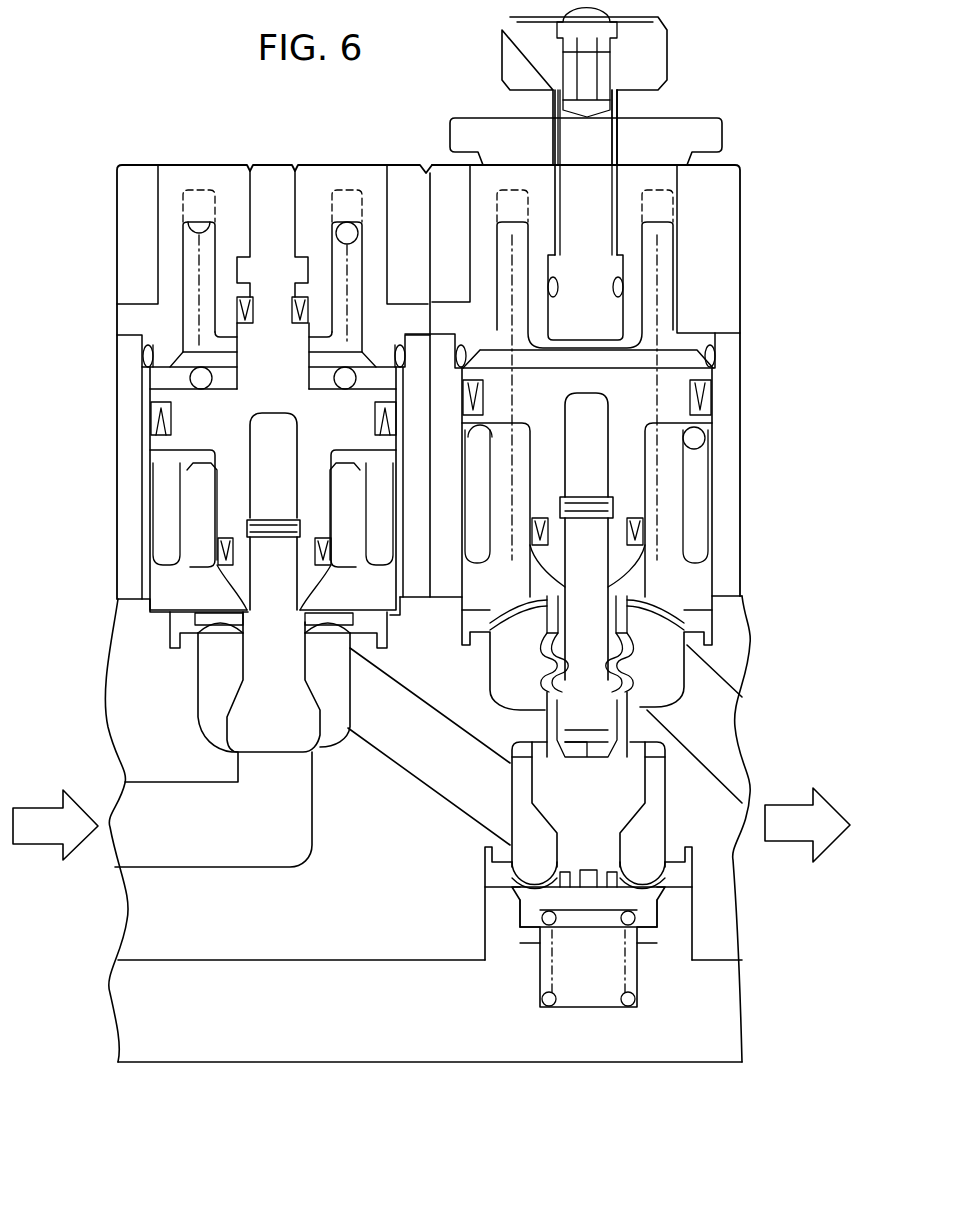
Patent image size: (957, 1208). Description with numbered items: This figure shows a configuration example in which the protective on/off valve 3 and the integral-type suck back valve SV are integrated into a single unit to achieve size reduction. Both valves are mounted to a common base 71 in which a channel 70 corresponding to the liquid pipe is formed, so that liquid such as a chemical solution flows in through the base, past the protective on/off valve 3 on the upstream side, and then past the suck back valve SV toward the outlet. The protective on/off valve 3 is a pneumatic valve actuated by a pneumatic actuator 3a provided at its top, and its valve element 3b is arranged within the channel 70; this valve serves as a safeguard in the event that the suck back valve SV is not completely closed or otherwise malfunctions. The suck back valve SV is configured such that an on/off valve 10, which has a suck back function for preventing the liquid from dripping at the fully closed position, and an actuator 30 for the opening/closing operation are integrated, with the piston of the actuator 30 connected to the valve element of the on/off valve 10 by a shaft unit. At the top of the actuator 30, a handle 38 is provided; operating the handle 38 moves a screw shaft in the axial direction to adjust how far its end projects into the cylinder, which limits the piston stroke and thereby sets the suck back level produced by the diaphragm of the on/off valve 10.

The protective on/off valve 3 is at (118, 163).
The pneumatic actuator 3a is at (117, 322).
The valve element 3b is at (250, 726).
The handle 38 is at (655, 52).
The suck back valve SV is at (741, 228).
The actuator 30 is at (741, 325).
The on/off valve 10 is at (748, 647).
The channel 70 is at (716, 737).
The common base 71 is at (718, 937).